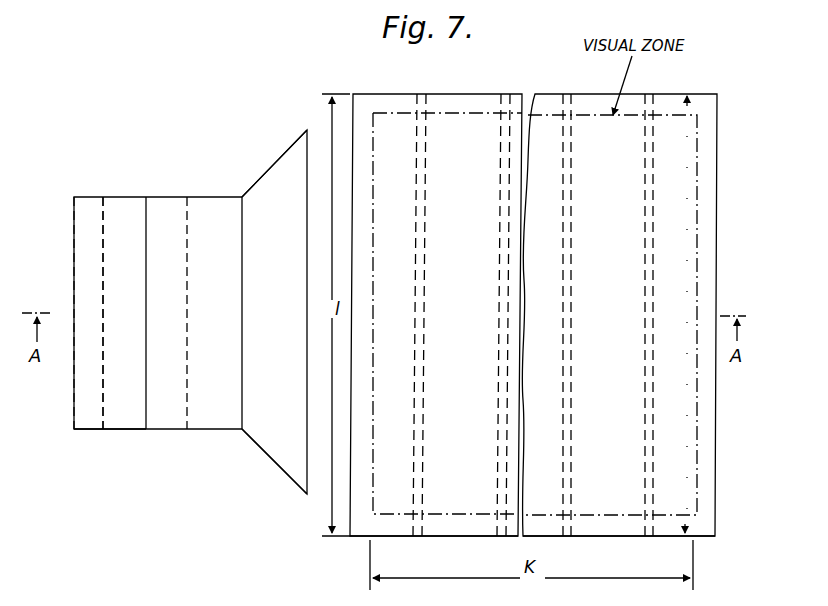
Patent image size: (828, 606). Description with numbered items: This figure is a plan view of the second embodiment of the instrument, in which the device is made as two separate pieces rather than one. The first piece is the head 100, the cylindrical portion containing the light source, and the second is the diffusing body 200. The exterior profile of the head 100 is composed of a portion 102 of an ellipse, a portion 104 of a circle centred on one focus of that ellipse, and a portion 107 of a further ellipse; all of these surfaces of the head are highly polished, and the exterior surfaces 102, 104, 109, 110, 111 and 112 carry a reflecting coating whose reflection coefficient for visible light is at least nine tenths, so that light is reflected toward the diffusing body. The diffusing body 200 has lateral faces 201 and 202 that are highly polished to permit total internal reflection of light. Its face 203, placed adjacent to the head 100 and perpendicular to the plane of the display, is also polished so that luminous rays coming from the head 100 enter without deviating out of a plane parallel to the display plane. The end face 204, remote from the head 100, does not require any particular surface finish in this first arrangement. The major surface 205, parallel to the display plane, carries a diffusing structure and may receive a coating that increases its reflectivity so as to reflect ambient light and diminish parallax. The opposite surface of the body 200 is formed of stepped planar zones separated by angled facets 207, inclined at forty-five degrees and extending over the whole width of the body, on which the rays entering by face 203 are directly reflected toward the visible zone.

The head 100 is at (158, 202).
The portion of ellipse 102 is at (88, 234).
The portion of circle 104 is at (213, 217).
The portion of further ellipse 107 is at (277, 191).
The exterior surface 109 is at (102, 173).
The exterior surface 110 is at (88, 432).
The exterior surface 111 is at (257, 447).
The exterior surface 112 is at (278, 159).
The diffusing body 200 is at (482, 93).
The lateral face 201 is at (447, 93).
The lateral face 202 is at (452, 539).
The face 203 is at (351, 102).
The end face 204 is at (721, 159).
The major surface 205 is at (674, 130).
The angled facets 207 is at (570, 93).